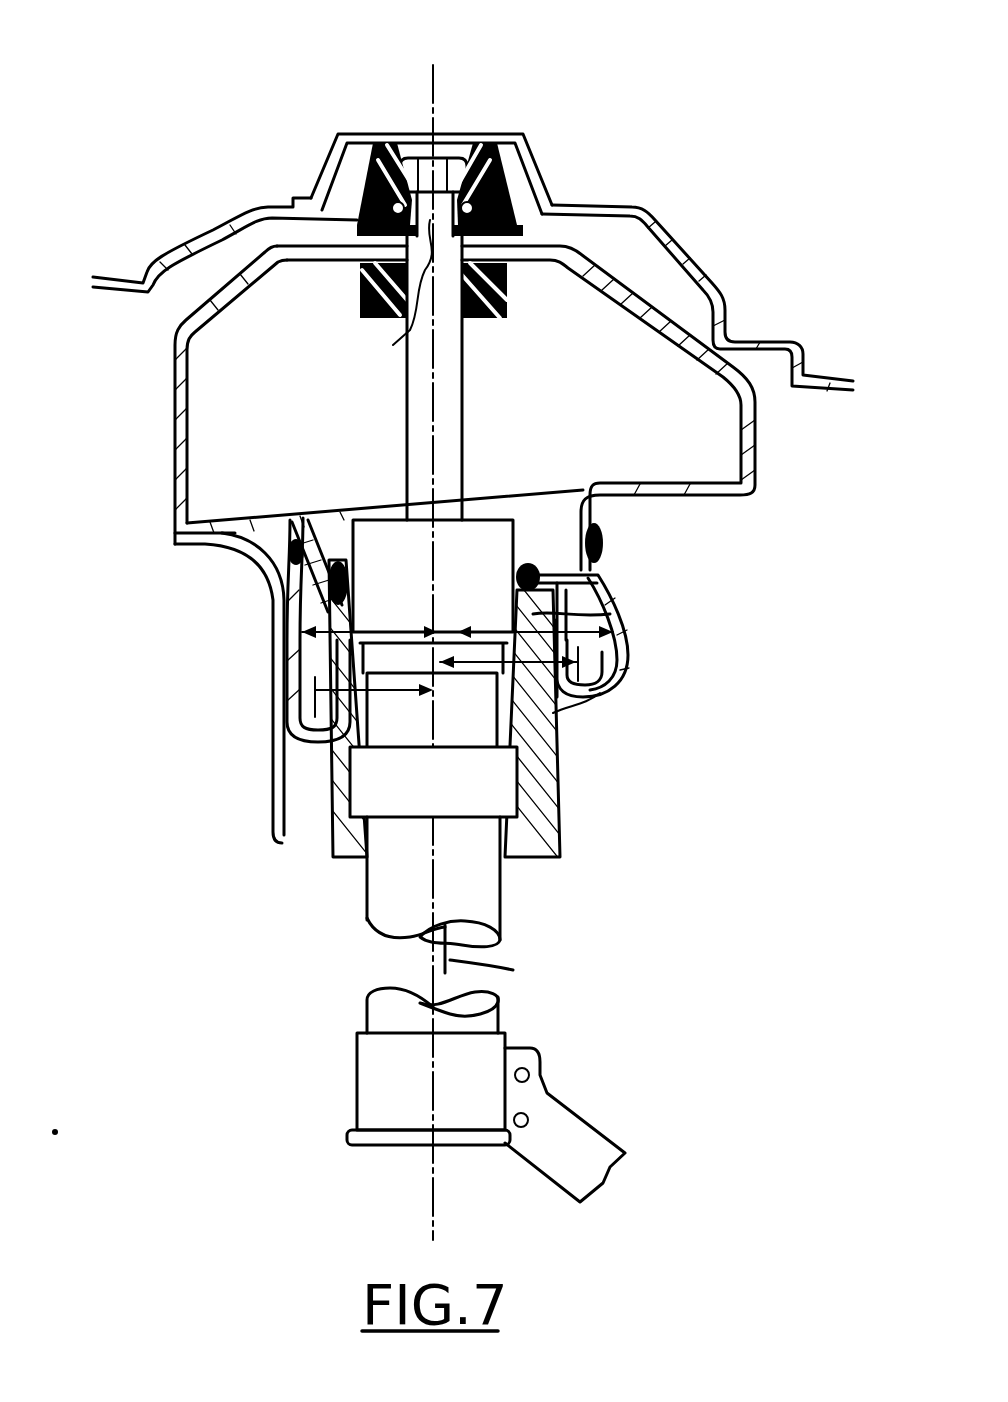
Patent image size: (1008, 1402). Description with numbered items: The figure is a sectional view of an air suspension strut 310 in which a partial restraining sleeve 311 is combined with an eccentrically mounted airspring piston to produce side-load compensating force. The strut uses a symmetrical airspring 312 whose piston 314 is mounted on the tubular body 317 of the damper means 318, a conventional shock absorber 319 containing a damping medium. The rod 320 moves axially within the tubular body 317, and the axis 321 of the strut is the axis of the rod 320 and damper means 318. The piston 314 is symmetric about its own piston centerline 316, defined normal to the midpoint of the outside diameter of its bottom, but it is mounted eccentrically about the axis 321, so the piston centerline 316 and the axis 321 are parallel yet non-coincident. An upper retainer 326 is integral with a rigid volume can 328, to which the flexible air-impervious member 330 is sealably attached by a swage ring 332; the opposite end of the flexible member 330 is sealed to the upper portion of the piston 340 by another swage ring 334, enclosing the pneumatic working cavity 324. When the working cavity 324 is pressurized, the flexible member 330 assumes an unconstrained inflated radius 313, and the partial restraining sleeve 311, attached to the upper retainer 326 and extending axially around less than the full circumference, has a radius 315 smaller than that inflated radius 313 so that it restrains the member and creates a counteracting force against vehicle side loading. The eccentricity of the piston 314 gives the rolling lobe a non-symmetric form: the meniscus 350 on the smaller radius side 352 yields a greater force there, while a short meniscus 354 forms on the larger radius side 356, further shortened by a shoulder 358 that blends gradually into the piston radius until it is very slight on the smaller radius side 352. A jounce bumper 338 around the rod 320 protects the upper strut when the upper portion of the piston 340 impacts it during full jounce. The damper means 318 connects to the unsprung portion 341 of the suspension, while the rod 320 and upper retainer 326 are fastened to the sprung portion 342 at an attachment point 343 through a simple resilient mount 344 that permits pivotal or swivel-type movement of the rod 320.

The air suspension strut 310 is at (602, 620).
The partial restraining sleeve 311 is at (281, 788).
The symmetrical airspring 312 is at (636, 582).
The unconstrained inflated radius 313 is at (477, 630).
The piston 314 is at (558, 840).
The radius of the partial restraining sleeve 315 is at (378, 625).
The piston centerline 316 is at (513, 970).
The tubular body 317 is at (500, 947).
The damper means 318 is at (346, 890).
The shock absorber 319 is at (367, 920).
The rod 320 is at (450, 410).
The axis of the strut 321 is at (437, 96).
The working cavity 324 is at (748, 422).
The upper retainer 326 is at (627, 287).
The volume can 328 is at (180, 393).
The flexible member 330 is at (625, 645).
The swage ring 332 is at (612, 556).
The swage ring 334 is at (300, 630).
The jounce bumper 338 is at (500, 298).
The upper portion of the piston 340 is at (377, 528).
The unsprung portion 341 is at (545, 1078).
The sprung portion 342 is at (530, 140).
The attachment point 343 is at (405, 320).
The resilient mount 344 is at (498, 190).
The meniscus 350 is at (298, 712).
The smaller radius side 352 is at (350, 742).
The short meniscus 354 is at (608, 690).
The larger radius side 356 is at (560, 713).
The shoulder 358 is at (607, 625).